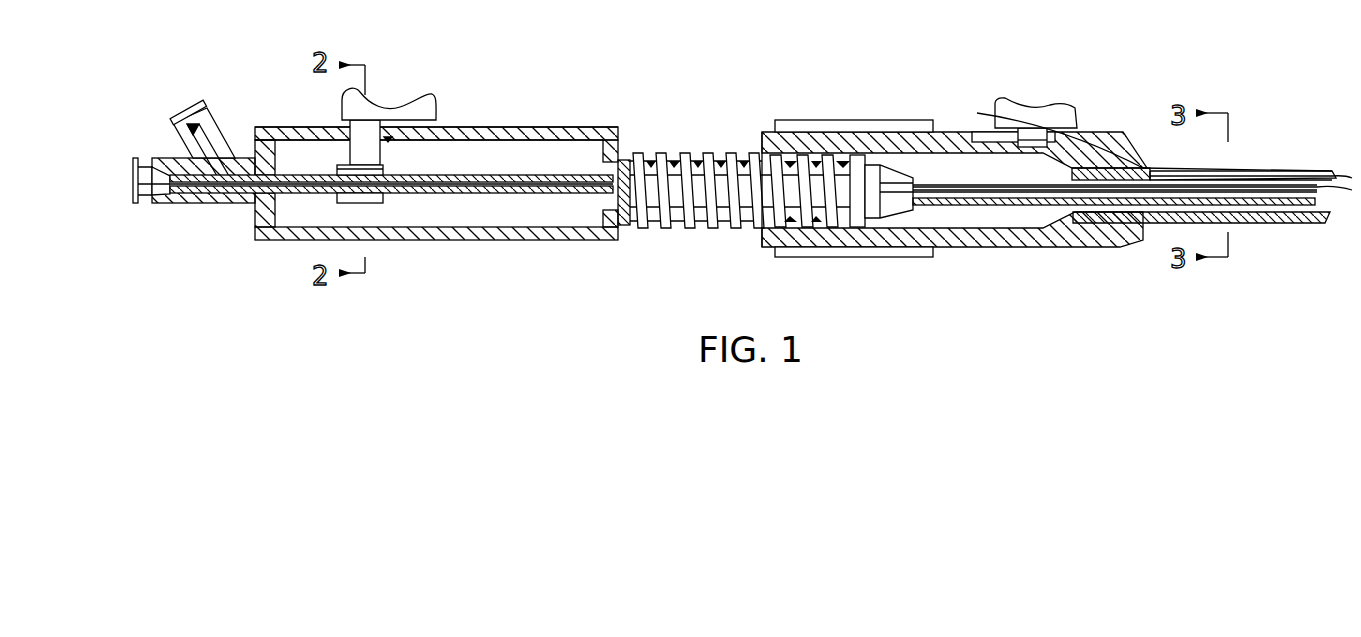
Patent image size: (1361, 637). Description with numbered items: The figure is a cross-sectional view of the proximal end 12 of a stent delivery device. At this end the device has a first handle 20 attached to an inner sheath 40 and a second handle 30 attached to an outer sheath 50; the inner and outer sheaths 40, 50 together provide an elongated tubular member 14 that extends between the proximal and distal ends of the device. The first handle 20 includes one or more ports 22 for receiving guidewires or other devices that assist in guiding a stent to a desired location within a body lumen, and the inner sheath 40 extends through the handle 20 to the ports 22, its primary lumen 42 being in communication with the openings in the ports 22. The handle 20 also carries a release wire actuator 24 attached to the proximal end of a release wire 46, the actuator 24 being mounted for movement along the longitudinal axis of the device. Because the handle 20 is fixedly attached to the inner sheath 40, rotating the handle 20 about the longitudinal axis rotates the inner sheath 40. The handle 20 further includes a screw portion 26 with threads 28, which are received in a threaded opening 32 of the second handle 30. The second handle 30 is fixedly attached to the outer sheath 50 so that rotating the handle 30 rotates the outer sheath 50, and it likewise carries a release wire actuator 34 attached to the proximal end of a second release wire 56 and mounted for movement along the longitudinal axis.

The proximal end 12 is at (1057, 67).
The elongated tubular member 14 is at (1301, 150).
The first handle 20 is at (537, 126).
The ports 22 is at (182, 100).
The release wire actuator 24 is at (428, 95).
The screw portion 26 is at (697, 244).
The threads 28 is at (707, 152).
The second handle 30 is at (1000, 247).
The threaded opening 32 is at (933, 222).
The release wire actuator 34 is at (1036, 110).
The inner sheath 40 is at (503, 194).
The primary lumen 42 is at (400, 194).
The release wire 46 is at (390, 167).
The outer sheath 50 is at (1262, 223).
The release wire 56 is at (990, 103).